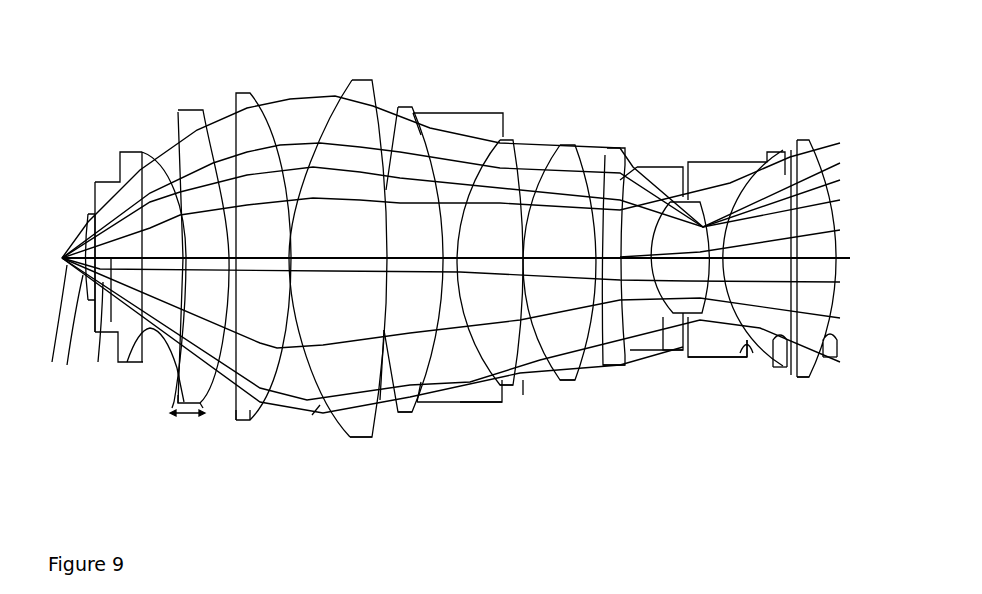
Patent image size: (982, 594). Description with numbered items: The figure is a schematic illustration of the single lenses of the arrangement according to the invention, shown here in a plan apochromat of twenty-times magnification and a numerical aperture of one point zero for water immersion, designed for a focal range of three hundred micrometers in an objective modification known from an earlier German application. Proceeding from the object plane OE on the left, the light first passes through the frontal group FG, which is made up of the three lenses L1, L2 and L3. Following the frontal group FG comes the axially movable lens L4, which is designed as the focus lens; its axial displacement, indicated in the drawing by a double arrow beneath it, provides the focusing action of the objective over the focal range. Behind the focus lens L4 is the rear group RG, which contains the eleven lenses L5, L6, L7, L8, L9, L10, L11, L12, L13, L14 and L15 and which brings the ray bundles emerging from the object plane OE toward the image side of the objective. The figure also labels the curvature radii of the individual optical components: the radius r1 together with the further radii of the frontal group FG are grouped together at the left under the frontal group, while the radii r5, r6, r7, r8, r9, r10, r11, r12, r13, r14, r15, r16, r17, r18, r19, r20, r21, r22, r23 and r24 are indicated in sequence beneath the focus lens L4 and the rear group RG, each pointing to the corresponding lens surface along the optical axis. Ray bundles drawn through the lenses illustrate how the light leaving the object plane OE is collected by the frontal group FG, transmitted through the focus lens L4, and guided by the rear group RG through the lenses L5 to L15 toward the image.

The object plane OE is at (67, 277).
The lens L1 is at (92, 222).
The lens L2 is at (108, 190).
The lens L3 is at (137, 163).
The lens L4 is at (187, 118).
The lens L5 is at (243, 100).
The lens L6 is at (360, 100).
The lens L7 is at (408, 100).
The lens L8 is at (455, 128).
The lens L9 is at (513, 140).
The lens L10 is at (558, 147).
The lens L11 is at (605, 155).
The lens L12 is at (657, 167).
The lens L13 is at (712, 162).
The lens L14 is at (762, 163).
The lens L15 is at (815, 142).
The radius r1 is at (80, 430).
The frontal group FG is at (80, 430).
The rear group RG is at (203, 477).
The radius r5 is at (160, 405).
The radius r6 is at (207, 405).
The radius r7 is at (222, 410).
The radius r8 is at (265, 418).
The radius r9 is at (312, 415).
The radius r10 is at (348, 437).
The radius r11 is at (383, 415).
The radius r12 is at (432, 402).
The radius r13 is at (470, 402).
The radius r14 is at (514, 387).
The radius r15 is at (537, 395).
The radius r16 is at (590, 380).
The radius r17 is at (605, 368).
The radius r18 is at (636, 355).
The radius r19 is at (665, 352).
The radius r20 is at (710, 357).
The radius r21 is at (744, 360).
The radius r22 is at (777, 368).
The radius r23 is at (810, 378).
The radius r24 is at (843, 360).